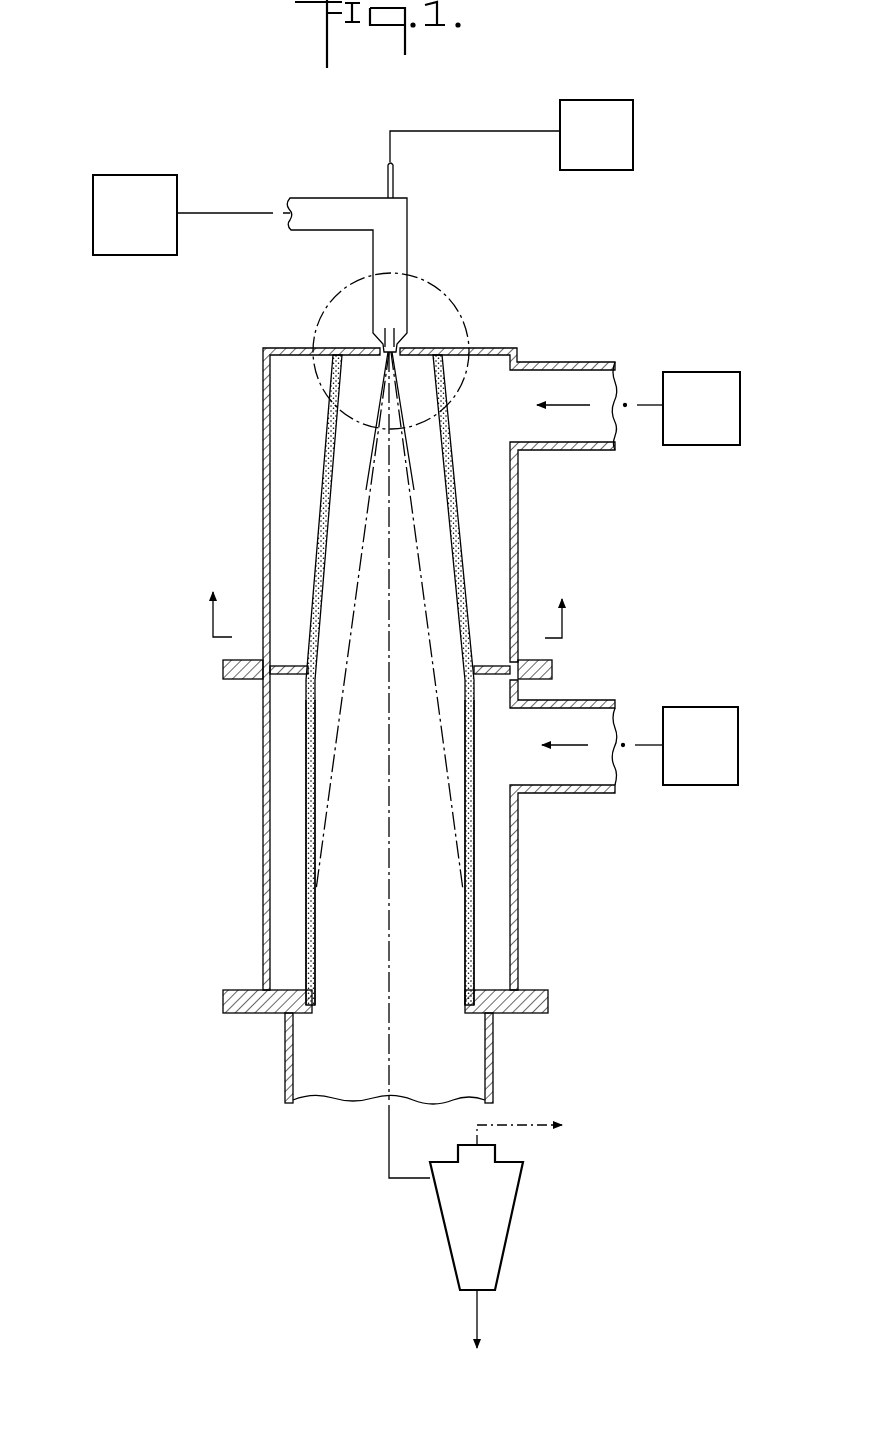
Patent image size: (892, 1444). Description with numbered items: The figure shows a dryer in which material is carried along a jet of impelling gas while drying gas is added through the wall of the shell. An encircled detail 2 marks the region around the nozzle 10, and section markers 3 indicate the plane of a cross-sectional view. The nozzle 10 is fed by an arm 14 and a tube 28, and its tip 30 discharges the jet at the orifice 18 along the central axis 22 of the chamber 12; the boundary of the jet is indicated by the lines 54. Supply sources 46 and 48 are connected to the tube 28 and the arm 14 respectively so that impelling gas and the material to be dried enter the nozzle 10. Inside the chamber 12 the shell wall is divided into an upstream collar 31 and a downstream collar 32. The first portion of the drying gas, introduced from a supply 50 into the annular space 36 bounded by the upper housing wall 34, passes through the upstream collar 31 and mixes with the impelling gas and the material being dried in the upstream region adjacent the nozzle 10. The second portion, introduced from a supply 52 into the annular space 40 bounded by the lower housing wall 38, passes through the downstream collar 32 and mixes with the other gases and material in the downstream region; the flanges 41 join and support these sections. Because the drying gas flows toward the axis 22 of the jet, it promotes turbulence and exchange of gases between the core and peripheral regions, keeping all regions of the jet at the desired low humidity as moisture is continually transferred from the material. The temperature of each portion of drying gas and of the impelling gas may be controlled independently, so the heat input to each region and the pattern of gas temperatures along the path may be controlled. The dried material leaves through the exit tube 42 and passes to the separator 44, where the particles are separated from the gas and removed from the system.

The detail circle of nozzle region 2 is at (447, 297).
The section line 3- 3 is at (386, 618).
The spray nozzle 10 is at (410, 257).
The reaction chamber 12 is at (322, 447).
The nozzle feed arm 14 is at (374, 254).
The nozzle orifice / spray 18 is at (382, 342).
The central axis / product stream 22 is at (388, 1040).
The gas supply tube 28 is at (394, 176).
The nozzle tip 30 is at (420, 347).
The upstream collar 31 is at (450, 472).
The downstream collar 32 is at (474, 840).
The upper housing wall 34 is at (519, 540).
The upper annular space 36 is at (497, 570).
The lower housing wall 38 is at (517, 888).
The lower annular space 40 is at (498, 940).
The flange 41 is at (487, 681).
The outlet tube 42 is at (285, 1075).
The separator 44 is at (513, 1223).
The gas supply source 46 is at (636, 141).
The liquid supply source 48 is at (133, 257).
The upper gas supply 50 is at (731, 372).
The lower gas supply 52 is at (724, 710).
The spray cone boundary 54 is at (358, 487).